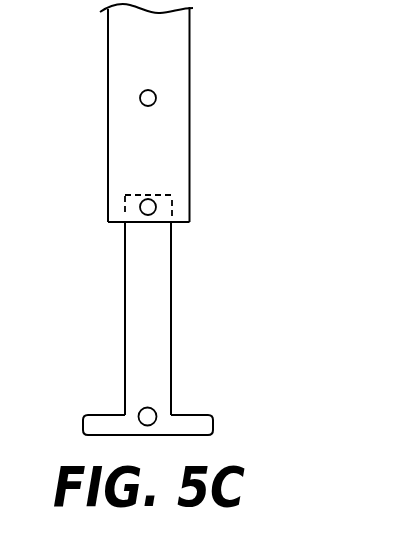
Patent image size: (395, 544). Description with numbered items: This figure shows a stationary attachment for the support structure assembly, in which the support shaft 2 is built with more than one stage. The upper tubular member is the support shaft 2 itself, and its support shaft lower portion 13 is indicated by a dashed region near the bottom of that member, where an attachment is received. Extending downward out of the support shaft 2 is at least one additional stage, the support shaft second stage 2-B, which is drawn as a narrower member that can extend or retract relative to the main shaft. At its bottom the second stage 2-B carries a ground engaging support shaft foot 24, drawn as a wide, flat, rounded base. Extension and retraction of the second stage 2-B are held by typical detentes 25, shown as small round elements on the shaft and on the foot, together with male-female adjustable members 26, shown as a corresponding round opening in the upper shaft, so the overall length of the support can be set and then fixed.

The support shaft 2 is at (182, 123).
The support shaft second stage 2-B is at (153, 307).
The support shaft lower portion 13 is at (124, 205).
The support shaft foot 24 is at (84, 423).
The support stand adjustable detente 25 is at (173, 200).
The male-female adjustable members 26 is at (140, 97).